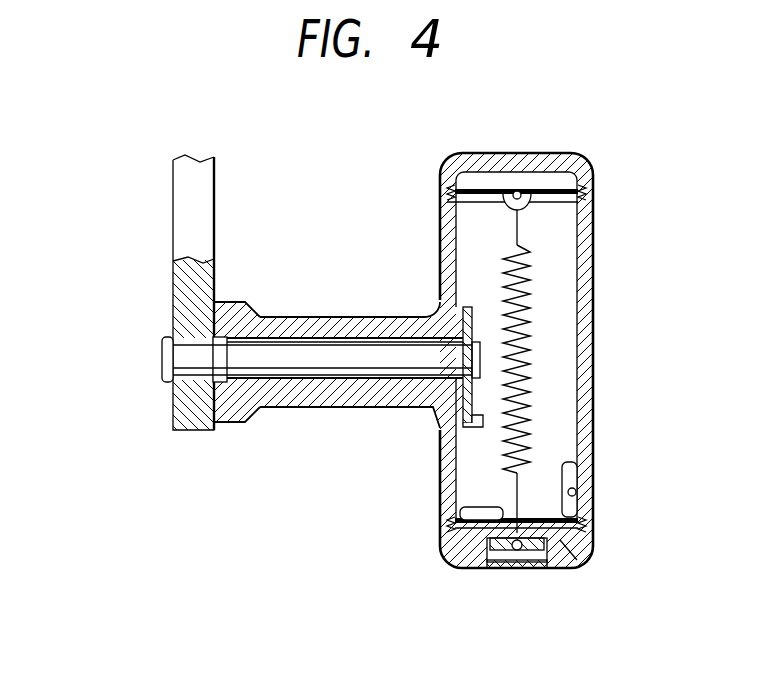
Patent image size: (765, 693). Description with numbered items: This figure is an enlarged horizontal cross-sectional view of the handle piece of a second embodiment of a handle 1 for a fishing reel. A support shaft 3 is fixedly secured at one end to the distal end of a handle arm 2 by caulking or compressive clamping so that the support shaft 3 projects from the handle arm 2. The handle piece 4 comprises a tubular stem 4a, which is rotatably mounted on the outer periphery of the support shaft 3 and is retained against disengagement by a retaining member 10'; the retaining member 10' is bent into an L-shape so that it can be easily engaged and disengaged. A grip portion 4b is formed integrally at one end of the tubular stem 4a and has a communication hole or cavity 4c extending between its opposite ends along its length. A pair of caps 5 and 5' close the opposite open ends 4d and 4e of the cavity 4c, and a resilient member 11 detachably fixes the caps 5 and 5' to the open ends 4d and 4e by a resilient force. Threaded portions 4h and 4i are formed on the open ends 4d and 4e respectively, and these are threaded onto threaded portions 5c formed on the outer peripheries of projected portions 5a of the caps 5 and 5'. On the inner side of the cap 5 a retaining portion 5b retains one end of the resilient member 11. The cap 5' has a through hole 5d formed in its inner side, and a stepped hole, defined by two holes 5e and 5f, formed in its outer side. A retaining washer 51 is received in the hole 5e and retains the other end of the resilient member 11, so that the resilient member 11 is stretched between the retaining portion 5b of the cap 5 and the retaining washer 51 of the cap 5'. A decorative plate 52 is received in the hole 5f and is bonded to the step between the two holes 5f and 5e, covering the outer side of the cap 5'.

The handle 1 is at (133, 167).
The handle arm 2 is at (173, 223).
The support shaft 3 is at (162, 357).
The handle piece 4 is at (338, 314).
The tubular stem 4a is at (283, 320).
The grip portion 4b is at (594, 400).
The communication hole or cavity 4c is at (555, 348).
The open end 4d is at (580, 216).
The open end 4e is at (577, 489).
The threaded portion 4h is at (466, 306).
The threaded portion 4i is at (573, 557).
The cap 5 is at (543, 335).
The cap 5' is at (560, 474).
The projected portion 5a is at (560, 189).
The retaining portion 5b is at (525, 207).
The threaded portion 5c is at (587, 193).
The through hole 5d is at (455, 521).
The hole 5e is at (537, 568).
The hole 5f is at (548, 568).
The retaining member 10' is at (486, 262).
The resilient member 11 is at (553, 293).
The retaining washer 51 is at (487, 548).
The decorative plate 52 is at (497, 569).